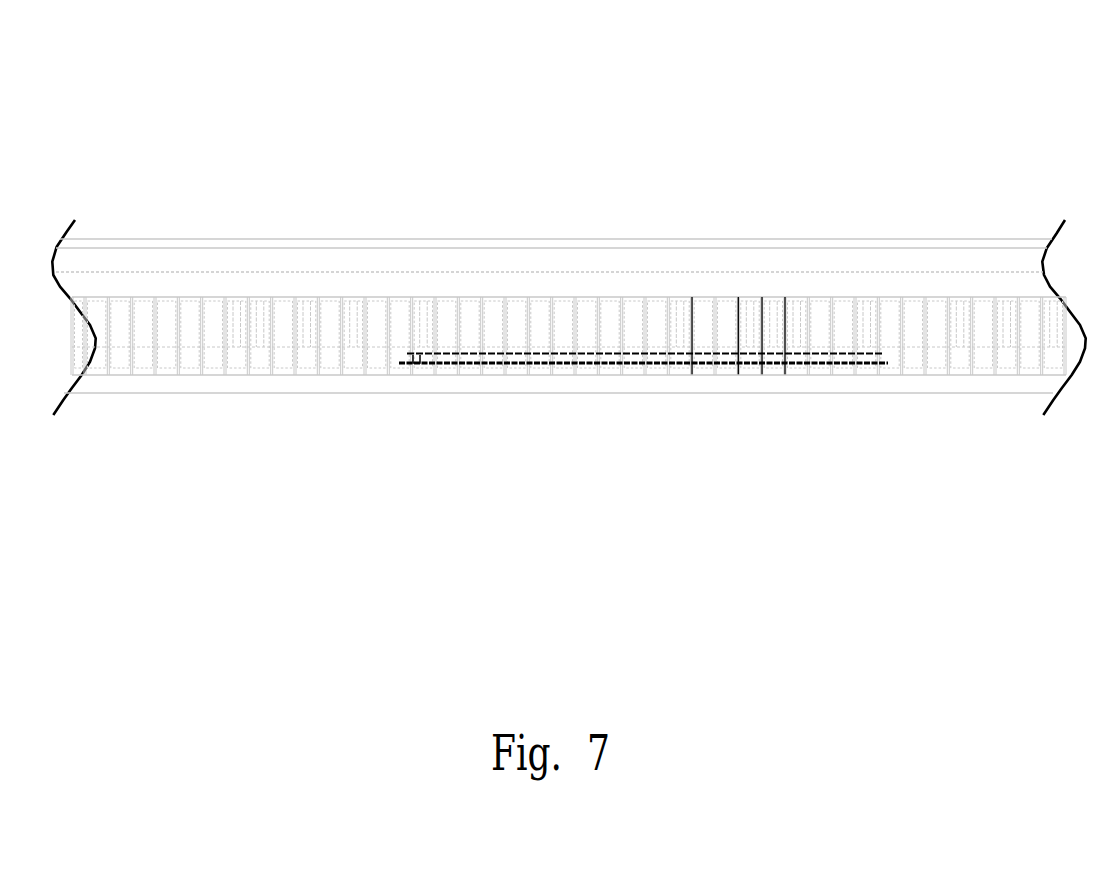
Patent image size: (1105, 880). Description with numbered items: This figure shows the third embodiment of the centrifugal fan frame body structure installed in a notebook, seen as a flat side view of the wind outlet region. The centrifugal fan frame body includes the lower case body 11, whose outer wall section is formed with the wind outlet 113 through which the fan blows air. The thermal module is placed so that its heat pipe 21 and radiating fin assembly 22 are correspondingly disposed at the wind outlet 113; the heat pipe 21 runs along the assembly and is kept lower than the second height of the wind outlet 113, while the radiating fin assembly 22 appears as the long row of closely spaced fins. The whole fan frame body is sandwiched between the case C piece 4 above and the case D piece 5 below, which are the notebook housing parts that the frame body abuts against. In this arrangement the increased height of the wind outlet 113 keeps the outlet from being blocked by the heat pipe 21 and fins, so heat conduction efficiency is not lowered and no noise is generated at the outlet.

The case C piece 4 is at (228, 240).
The case D piece 5 is at (232, 385).
The lower case body 11 is at (1025, 240).
The wind outlet 113 is at (870, 260).
The heat pipe 21 is at (468, 288).
The radiating fin assembly 22 is at (103, 375).